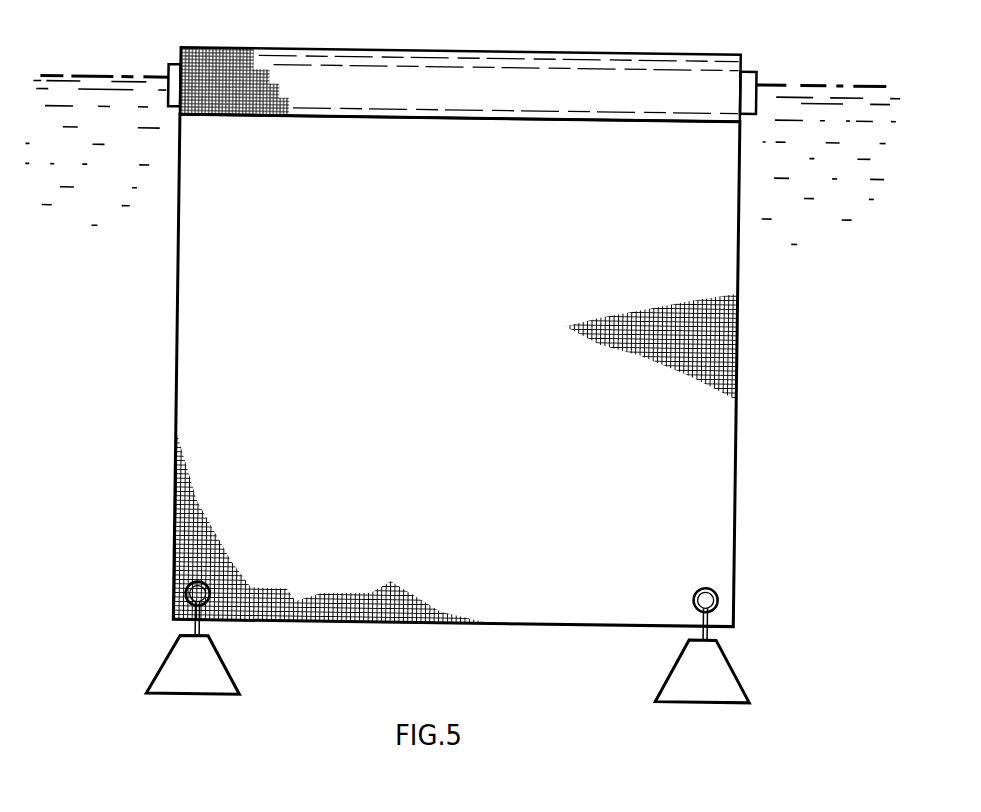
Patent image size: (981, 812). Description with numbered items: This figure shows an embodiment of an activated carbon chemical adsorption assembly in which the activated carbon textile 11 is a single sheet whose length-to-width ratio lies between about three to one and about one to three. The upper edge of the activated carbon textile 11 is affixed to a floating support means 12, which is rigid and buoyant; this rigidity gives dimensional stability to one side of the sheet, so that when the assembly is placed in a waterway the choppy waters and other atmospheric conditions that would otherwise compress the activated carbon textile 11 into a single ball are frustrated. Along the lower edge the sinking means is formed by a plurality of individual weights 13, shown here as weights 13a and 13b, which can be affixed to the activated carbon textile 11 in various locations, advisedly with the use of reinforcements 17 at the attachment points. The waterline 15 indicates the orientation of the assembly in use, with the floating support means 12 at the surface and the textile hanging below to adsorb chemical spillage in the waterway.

The activated carbon textile 11 is at (202, 338).
The floating support means 12 is at (169, 71).
The individual weights 13 is at (460, 675).
The individual weight 13a is at (737, 670).
The individual weight 13b is at (167, 660).
The waterline 15 is at (805, 88).
The reinforcements 17 is at (717, 592).